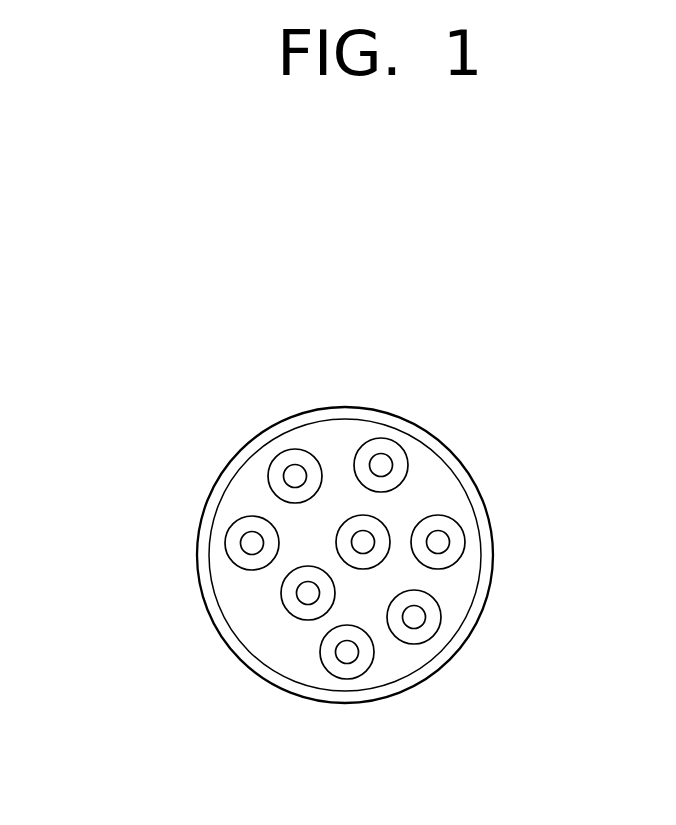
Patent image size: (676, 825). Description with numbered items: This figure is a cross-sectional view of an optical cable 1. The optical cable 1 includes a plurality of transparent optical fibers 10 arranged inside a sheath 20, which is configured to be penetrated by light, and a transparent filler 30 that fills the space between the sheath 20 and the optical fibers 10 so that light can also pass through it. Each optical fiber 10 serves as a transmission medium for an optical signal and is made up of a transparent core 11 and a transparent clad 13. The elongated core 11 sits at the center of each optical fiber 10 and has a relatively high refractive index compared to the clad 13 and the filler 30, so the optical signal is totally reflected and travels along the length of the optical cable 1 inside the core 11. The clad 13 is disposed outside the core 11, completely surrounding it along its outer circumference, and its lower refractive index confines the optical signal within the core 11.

The optical cable 1 is at (376, 362).
The optical fiber 10 is at (100, 540).
The core 11 is at (250, 543).
The clad 13 is at (240, 567).
The sheath 20 is at (463, 473).
The filler 30 is at (463, 592).